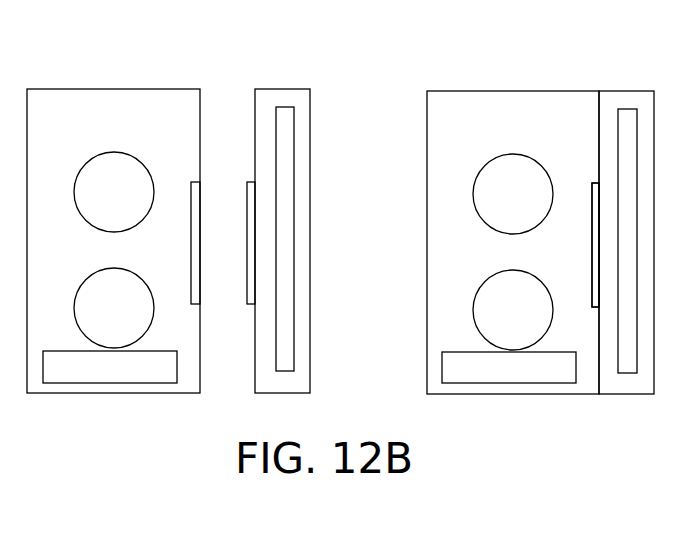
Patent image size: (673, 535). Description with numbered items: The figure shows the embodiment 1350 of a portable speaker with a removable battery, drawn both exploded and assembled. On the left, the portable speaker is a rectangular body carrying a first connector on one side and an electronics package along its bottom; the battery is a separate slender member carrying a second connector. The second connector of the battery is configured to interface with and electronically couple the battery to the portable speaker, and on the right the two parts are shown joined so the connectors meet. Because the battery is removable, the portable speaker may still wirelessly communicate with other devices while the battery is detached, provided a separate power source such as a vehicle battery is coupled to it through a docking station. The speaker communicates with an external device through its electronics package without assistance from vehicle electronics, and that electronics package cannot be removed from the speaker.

The embodiment 1350 is at (563, 36).